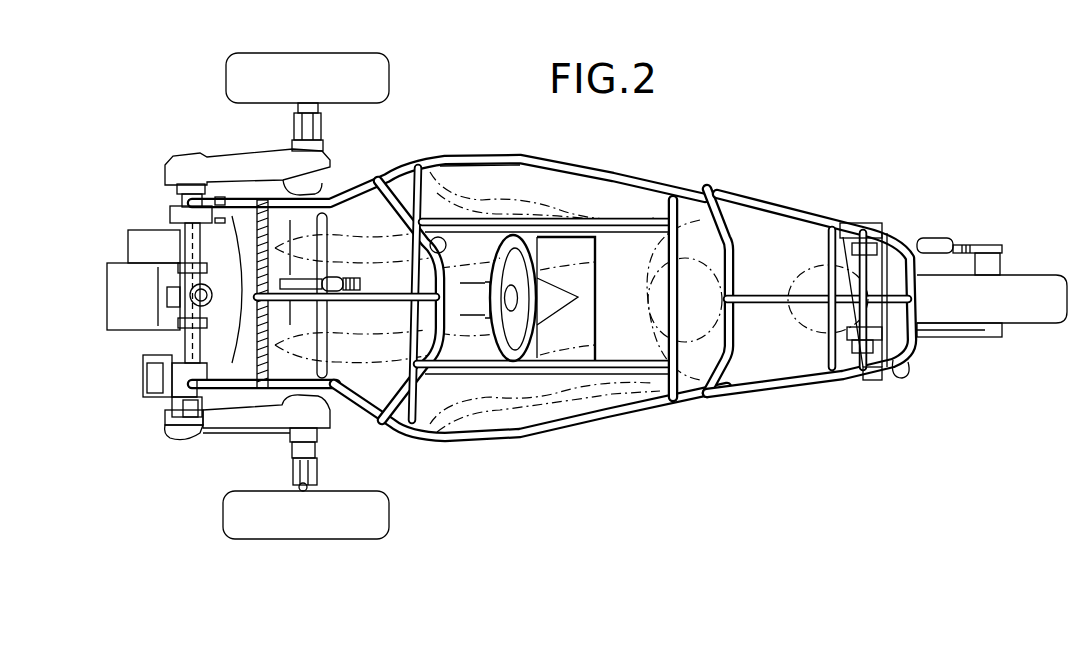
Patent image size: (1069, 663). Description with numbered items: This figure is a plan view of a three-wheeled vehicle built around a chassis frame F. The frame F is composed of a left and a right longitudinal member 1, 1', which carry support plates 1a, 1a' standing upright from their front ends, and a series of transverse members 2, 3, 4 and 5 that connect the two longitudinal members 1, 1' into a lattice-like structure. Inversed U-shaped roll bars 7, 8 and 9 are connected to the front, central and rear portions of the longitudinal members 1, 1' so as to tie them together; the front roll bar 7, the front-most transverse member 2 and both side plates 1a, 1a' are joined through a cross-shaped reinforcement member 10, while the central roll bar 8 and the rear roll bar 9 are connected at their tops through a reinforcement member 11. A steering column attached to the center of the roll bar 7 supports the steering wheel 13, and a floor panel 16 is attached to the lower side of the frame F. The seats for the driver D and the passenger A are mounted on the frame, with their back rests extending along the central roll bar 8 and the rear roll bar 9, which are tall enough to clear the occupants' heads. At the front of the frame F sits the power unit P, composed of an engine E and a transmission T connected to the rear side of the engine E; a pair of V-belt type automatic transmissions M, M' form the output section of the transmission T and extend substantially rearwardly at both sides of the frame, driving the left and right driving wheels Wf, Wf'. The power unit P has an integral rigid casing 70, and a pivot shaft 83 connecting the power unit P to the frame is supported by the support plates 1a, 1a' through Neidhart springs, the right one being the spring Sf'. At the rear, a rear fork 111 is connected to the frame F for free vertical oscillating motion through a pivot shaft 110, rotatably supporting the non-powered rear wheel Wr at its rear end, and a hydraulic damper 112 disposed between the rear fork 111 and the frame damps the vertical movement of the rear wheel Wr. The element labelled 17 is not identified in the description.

The left longitudinal member 1 is at (530, 430).
The right longitudinal member 1' is at (448, 163).
The left support plate 1a is at (190, 366).
The right support plate 1a' is at (203, 173).
The front-most transverse member 2 is at (262, 369).
The intermediate transverse member 3 is at (412, 318).
The intermediate transverse member 4 is at (667, 266).
The transverse member 5 is at (828, 350).
The front roll bar 7 is at (434, 347).
The central roll bar 8 is at (730, 358).
The rear roll bar 9 is at (896, 362).
The cross-shaped reinforcement member 10 is at (331, 234).
The reinforcement member 11 is at (750, 295).
The steering wheel 13 is at (498, 255).
The floor panel 16 is at (463, 423).
The seat 17 is at (593, 328).
The casing 70 is at (174, 441).
The pivot shaft 83 is at (197, 251).
The pivot shaft 110 is at (838, 261).
The rear fork 111 is at (950, 337).
The hydraulic damper 112 is at (923, 242).
The passenger A is at (822, 218).
The driver D is at (696, 212).
The engine E is at (114, 303).
The frame F is at (570, 160).
The left V-belt type automatic transmission M is at (266, 443).
The right V-belt type automatic transmission M' is at (247, 165).
The power unit P is at (106, 256).
The right Neidhart spring Sf' is at (161, 284).
The transmission T is at (190, 447).
The left driving wheel Wf is at (306, 535).
The right driving wheel Wf' is at (307, 86).
The non-powered rear wheel Wr is at (1047, 280).